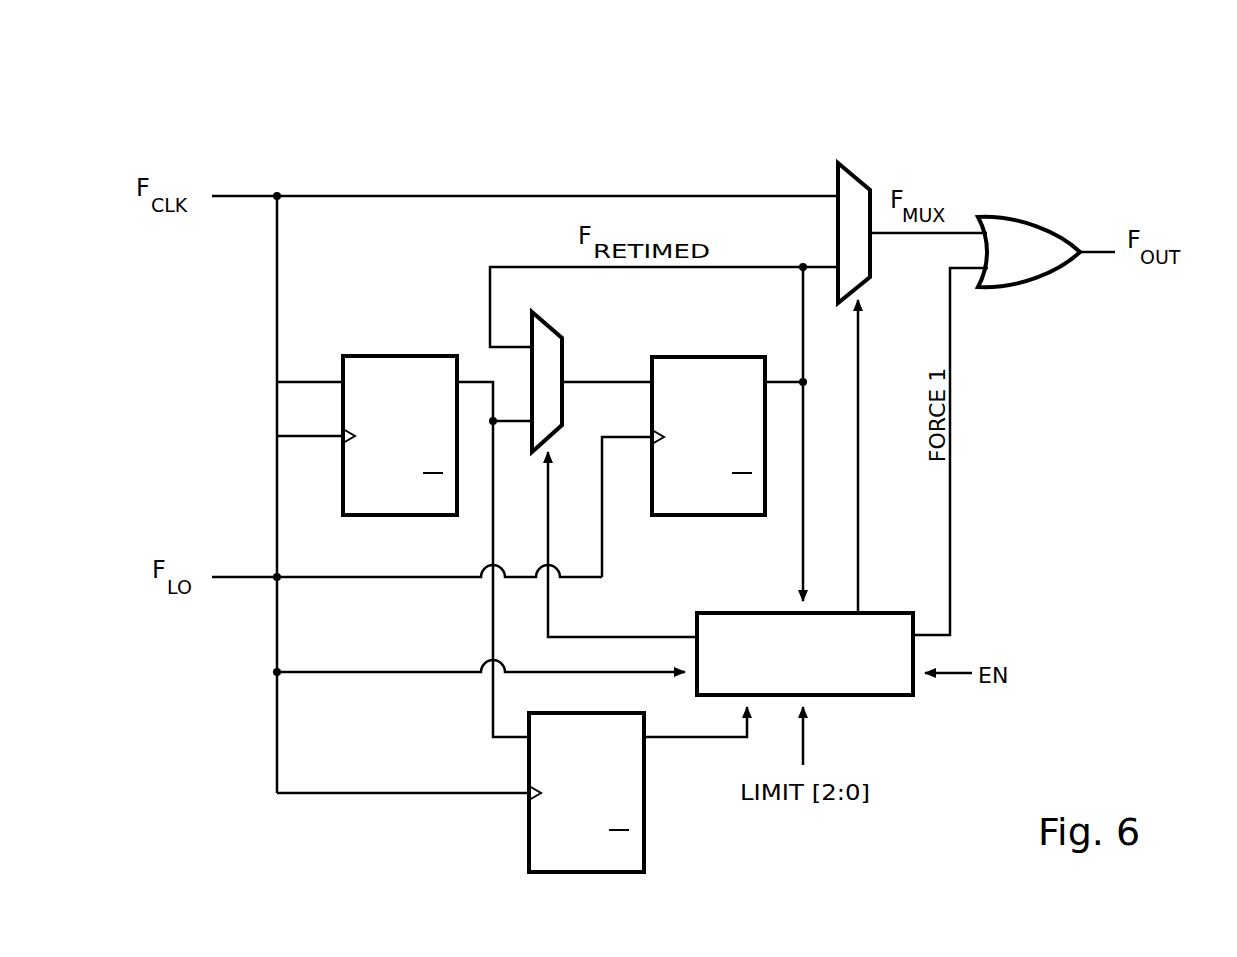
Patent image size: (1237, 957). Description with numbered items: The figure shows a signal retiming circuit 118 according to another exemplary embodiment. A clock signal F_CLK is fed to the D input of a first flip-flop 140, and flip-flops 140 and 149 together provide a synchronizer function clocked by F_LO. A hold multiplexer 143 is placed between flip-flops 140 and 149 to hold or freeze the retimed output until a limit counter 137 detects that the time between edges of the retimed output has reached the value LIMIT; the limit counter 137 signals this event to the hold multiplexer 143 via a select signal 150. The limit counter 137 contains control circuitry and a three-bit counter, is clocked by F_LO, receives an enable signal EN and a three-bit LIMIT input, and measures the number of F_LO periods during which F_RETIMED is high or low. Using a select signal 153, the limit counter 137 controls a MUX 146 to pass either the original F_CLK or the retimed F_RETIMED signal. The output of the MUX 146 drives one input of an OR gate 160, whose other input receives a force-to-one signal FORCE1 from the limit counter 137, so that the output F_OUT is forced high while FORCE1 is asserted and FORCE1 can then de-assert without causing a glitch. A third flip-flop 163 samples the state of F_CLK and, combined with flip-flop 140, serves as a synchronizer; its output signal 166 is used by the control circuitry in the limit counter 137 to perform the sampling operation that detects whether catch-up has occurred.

The signal retiming circuit 118 is at (530, 118).
The limit counter 137 is at (875, 697).
The flip-flop 140 is at (363, 517).
The hold multiplexer 143 is at (551, 318).
The MUX 146 is at (857, 171).
The flip-flop 149 is at (675, 517).
The select signal 150 is at (550, 598).
The select signal 153 is at (860, 553).
The OR gate 160 is at (1037, 217).
The flip-flop 163 is at (529, 838).
The signal 166 is at (674, 740).